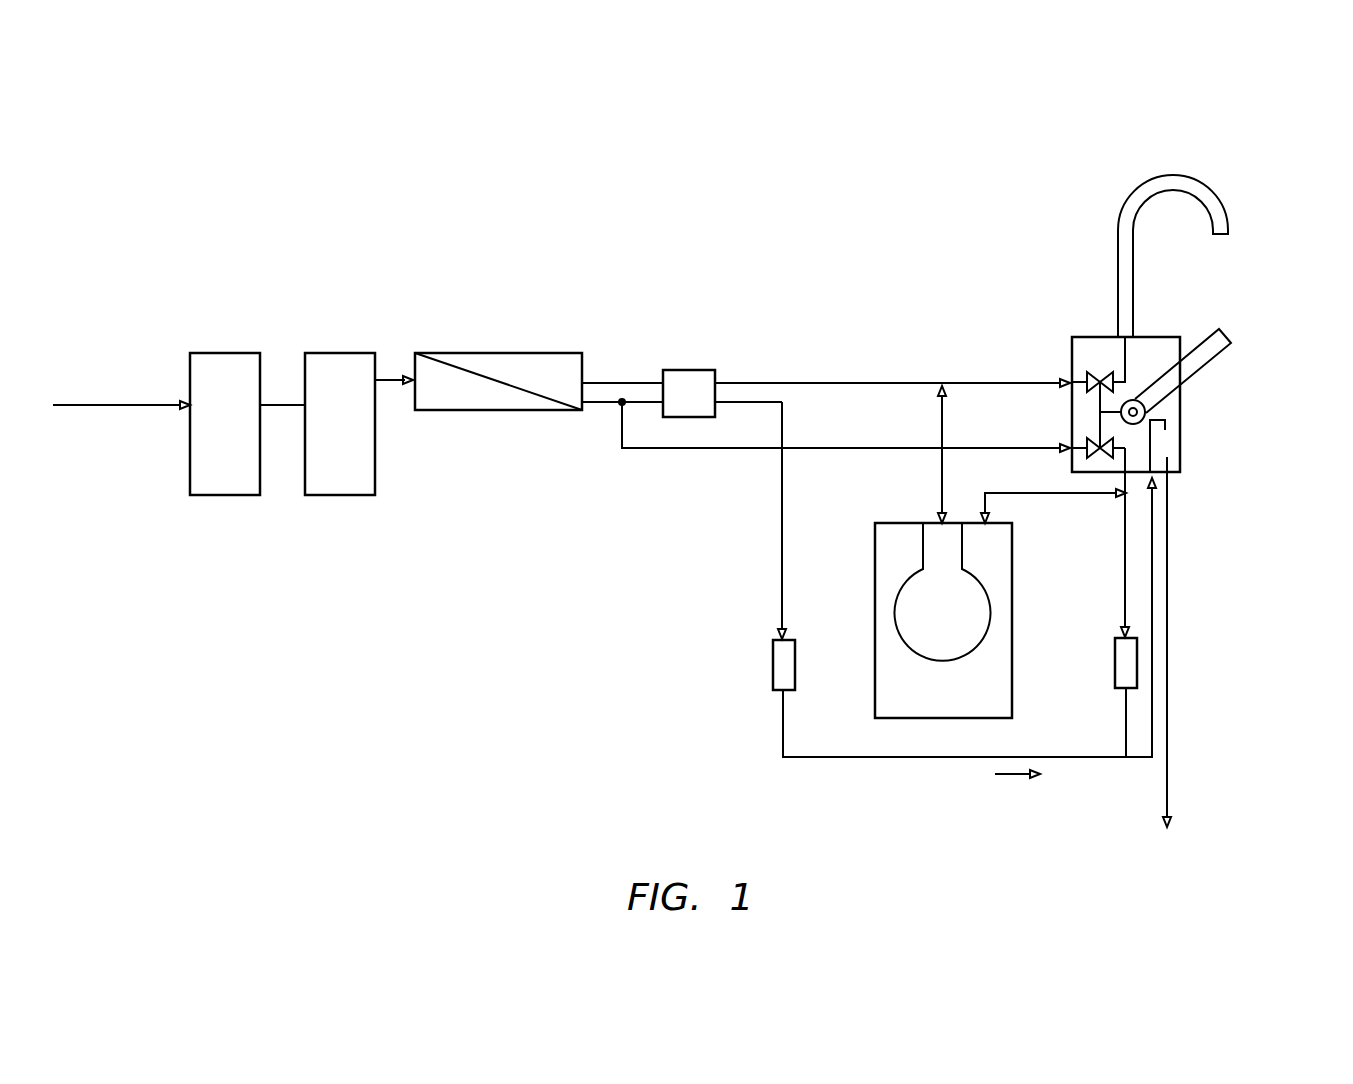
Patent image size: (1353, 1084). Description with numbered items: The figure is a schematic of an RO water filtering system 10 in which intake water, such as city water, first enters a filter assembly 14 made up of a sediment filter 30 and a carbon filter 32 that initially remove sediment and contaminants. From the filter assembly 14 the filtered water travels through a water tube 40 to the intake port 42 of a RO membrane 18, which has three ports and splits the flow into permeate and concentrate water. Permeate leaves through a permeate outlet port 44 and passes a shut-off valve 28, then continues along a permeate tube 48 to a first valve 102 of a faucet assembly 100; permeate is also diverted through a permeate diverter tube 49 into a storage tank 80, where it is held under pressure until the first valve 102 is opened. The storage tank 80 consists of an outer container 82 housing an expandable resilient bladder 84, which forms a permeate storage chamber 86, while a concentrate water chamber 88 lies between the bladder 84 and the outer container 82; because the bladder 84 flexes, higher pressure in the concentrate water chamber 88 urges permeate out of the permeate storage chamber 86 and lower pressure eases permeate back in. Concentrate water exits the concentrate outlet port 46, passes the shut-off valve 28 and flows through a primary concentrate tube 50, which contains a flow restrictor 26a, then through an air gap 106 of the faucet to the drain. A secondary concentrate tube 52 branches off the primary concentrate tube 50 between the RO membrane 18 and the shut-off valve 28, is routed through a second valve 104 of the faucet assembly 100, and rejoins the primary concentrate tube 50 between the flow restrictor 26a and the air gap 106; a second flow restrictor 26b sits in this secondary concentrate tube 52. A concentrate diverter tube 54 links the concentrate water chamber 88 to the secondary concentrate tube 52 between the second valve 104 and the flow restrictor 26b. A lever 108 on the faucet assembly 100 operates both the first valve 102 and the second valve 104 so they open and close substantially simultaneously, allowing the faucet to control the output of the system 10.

The RO water filtering system 10 is at (391, 185).
The filter assembly 14 is at (375, 340).
The RO membrane 18 is at (493, 340).
The flow restrictor 26a is at (773, 665).
The flow restrictor 26b is at (1115, 670).
The shut-off valve 28 is at (685, 370).
The sediment filter 30 is at (190, 457).
The carbon filter 32 is at (377, 478).
The water tube 40 is at (392, 378).
The intake port 42 is at (399, 390).
The permeate outlet port 44 is at (585, 378).
The concentrate outlet port 46 is at (588, 412).
The permeate tube 48 is at (892, 380).
The permeate diverter tube 49 is at (945, 476).
The primary concentrate tube 50 is at (785, 500).
The secondary concentrate tube 52 is at (707, 452).
The concentrate diverter tube 54 is at (1090, 497).
The storage tank 80 is at (864, 588).
The outer container 82 is at (1015, 635).
The expandable resilient bladder 84 is at (965, 565).
The permeate storage chamber 86 is at (926, 629).
The concentrate water chamber 88 is at (892, 707).
The faucet assembly 100 is at (1097, 243).
The first valve 102 is at (1090, 370).
The second valve 104 is at (1072, 442).
The air gap 106 is at (1222, 440).
The lever 108 is at (1220, 362).